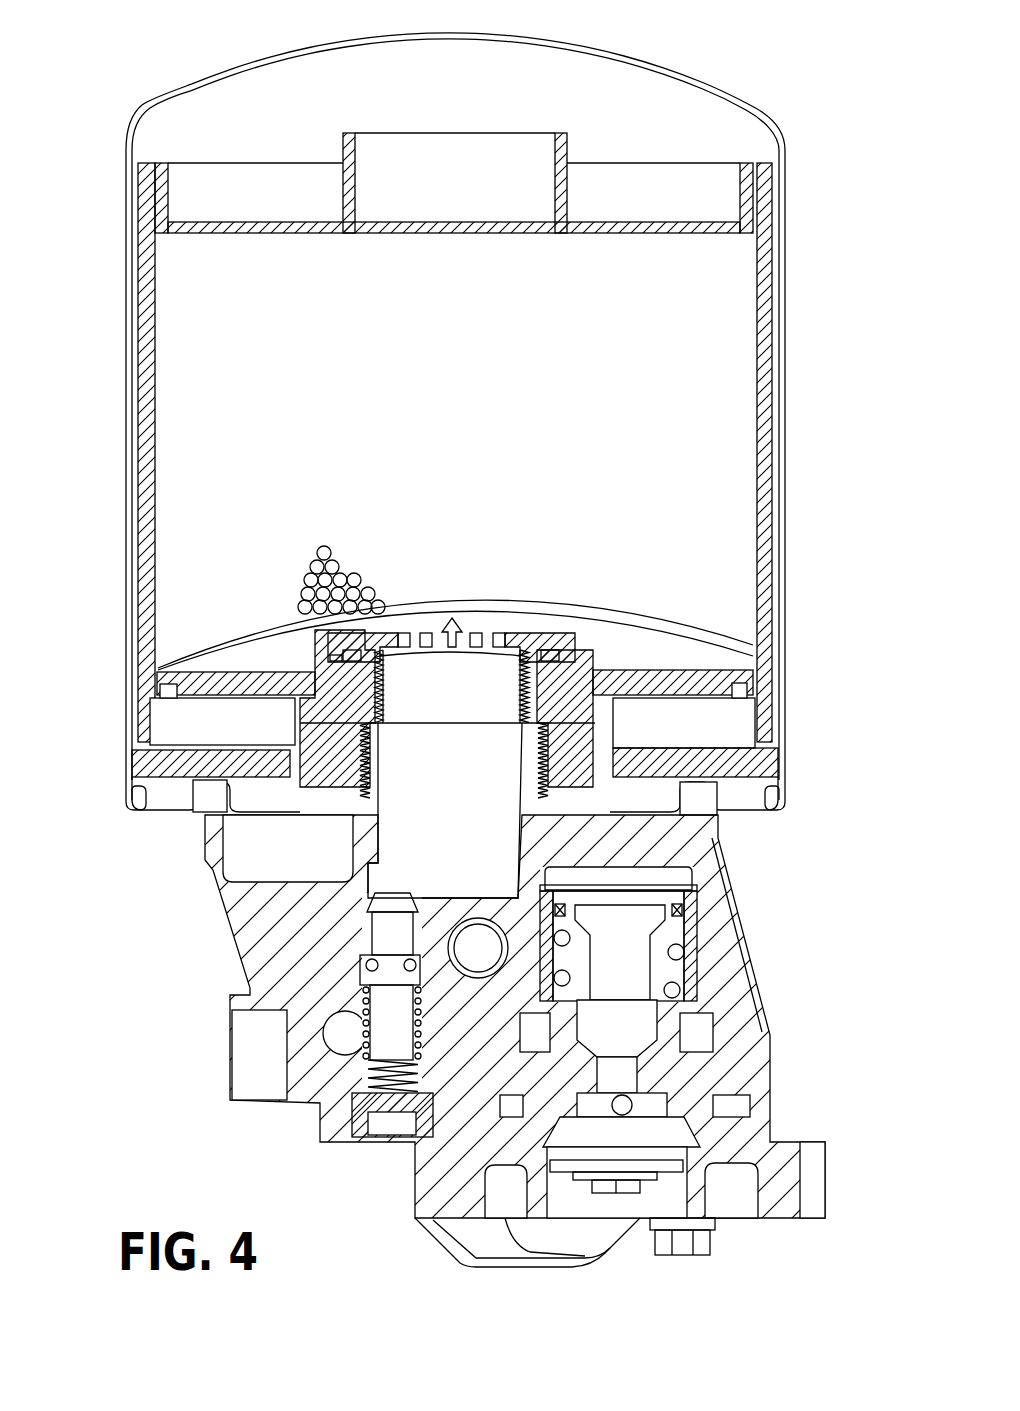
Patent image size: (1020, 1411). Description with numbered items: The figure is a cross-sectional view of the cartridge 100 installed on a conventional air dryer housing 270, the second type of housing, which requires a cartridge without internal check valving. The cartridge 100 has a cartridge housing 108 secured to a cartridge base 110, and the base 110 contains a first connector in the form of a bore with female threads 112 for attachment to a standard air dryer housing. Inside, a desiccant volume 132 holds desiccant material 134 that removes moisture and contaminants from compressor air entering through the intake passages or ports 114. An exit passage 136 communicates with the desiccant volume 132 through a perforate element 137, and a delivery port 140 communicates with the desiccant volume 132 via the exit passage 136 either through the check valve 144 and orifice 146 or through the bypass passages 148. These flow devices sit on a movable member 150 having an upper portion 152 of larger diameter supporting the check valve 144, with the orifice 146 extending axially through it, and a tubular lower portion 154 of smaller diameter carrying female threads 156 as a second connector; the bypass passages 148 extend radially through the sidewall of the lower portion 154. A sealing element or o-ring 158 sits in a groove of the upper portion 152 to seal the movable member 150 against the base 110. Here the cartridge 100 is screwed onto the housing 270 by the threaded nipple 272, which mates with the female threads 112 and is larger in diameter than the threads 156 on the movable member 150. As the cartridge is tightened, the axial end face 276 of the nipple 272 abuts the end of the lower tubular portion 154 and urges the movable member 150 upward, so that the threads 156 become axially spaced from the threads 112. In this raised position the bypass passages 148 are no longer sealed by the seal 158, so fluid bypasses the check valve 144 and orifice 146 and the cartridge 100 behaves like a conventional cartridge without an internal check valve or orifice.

The cartridge 100 is at (113, 103).
The cartridge housing 108 is at (677, 82).
The cartridge base 110 is at (760, 762).
The female threads 112 is at (290, 740).
The intake passages or ports 114 is at (280, 768).
The desiccant volume 132 is at (195, 340).
The desiccant material 134 is at (350, 545).
The exit passage 136 is at (502, 636).
The perforate element 137 is at (468, 600).
The delivery port 140 is at (600, 665).
The check valve 144 is at (453, 647).
The orifice 146 is at (404, 628).
The bypass passages 148 is at (320, 640).
The movable member 150 is at (330, 652).
The upper portion 152 is at (515, 612).
The tubular lower portion 154 is at (340, 662).
The female threads 156 is at (420, 724).
The sealing element (o-ring) 158 is at (315, 658).
The conventional air dryer housing 270 is at (282, 1128).
The threaded nipple 272 is at (378, 855).
The axial end face 276 is at (640, 700).